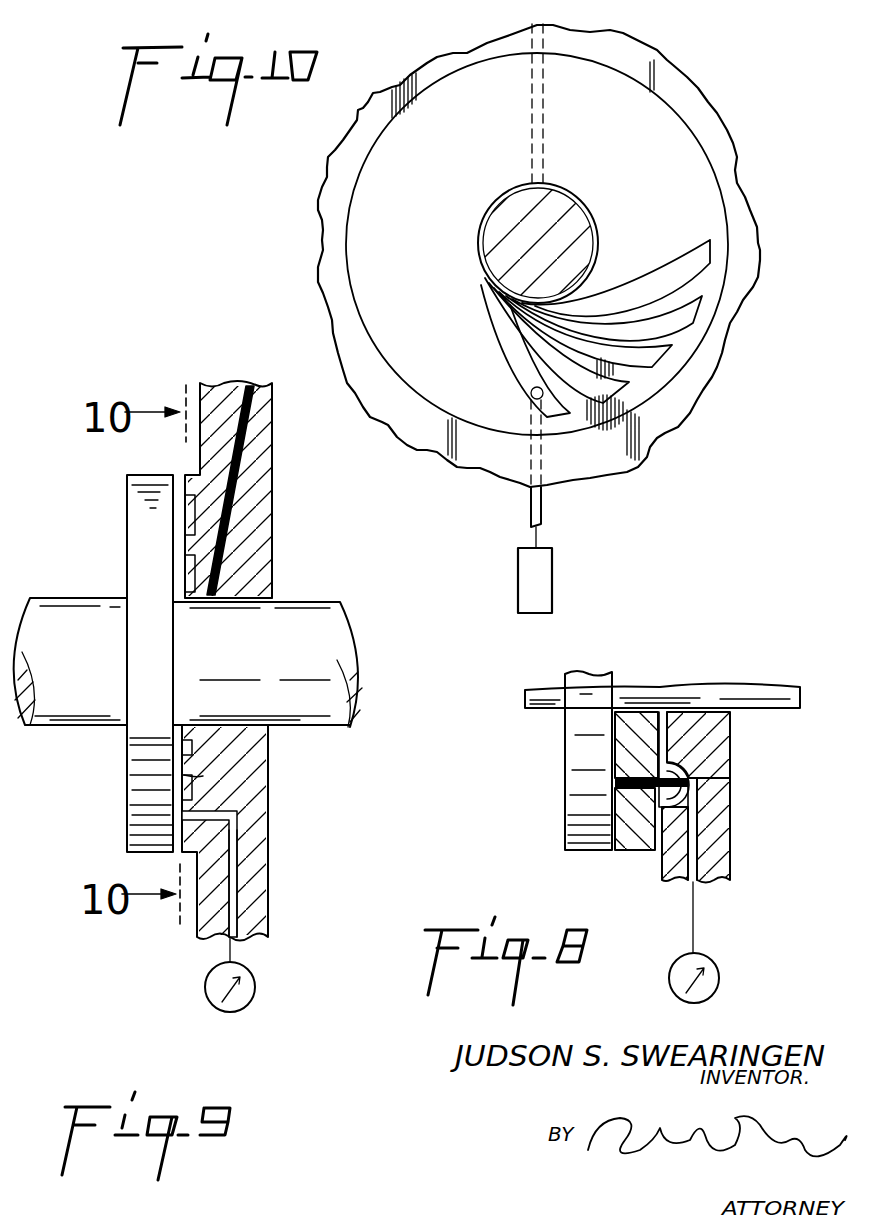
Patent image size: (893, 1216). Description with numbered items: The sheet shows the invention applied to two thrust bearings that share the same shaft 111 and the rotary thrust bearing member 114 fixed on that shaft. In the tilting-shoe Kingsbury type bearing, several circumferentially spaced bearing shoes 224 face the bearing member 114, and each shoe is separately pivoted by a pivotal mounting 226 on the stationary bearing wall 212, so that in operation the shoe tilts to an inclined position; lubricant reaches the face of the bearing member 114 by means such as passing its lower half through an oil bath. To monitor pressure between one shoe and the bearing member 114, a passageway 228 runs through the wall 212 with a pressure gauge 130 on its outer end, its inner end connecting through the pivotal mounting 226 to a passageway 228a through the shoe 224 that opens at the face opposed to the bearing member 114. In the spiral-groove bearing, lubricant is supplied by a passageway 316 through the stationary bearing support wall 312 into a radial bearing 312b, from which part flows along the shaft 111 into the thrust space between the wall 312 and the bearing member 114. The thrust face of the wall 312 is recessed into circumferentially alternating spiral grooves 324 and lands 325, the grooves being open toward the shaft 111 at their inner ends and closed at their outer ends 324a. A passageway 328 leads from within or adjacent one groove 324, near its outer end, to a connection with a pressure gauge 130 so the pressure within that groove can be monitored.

In FIG. 10, the shaft 111 is at (482, 226).
In FIG. 9, the shaft 111 is at (80, 598).
In FIG. 8, the shaft 111 is at (722, 687).
In FIG. 9, the rotary thrust bearing member 114 is at (143, 527).
In FIG. 8, the rotary thrust bearing member 114 is at (573, 727).
In FIG. 10, the pressure gauge 130 is at (518, 577).
In FIG. 9, the pressure gauge 130 is at (258, 993).
In FIG. 8, the pressure gauge 130 is at (720, 968).
In FIG. 8, the stationary bearing wall 212 is at (718, 865).
In FIG. 8, the bearing shoe 224 is at (638, 835).
In FIG. 8, the pivotal mounting 226 is at (676, 766).
In FIG. 8, the passageway 228 is at (696, 846).
In FIG. 8, the passageway through shoe 228a is at (616, 780).
In FIG. 10, the stationary bearing support wall 312 is at (696, 108).
In FIG. 9, the stationary bearing support wall 312 is at (258, 502).
In FIG. 9, the radial bearing 312b is at (235, 596).
In FIG. 10, the passageway 316 is at (545, 64).
In FIG. 9, the passageway 316 is at (245, 470).
In FIG. 10, the grooves 324 is at (664, 350).
In FIG. 9, the grooves 324 is at (186, 758).
In FIG. 10, the lands 325 is at (630, 378).
In FIG. 9, the lands 325 is at (186, 778).
In FIG. 10, the closed outer ends of grooves 324a is at (640, 407).
In FIG. 9, the closed outer ends of grooves 324a is at (182, 843).
In FIG. 10, the passageway 328 is at (527, 460).
In FIG. 9, the passageway 328 is at (233, 898).